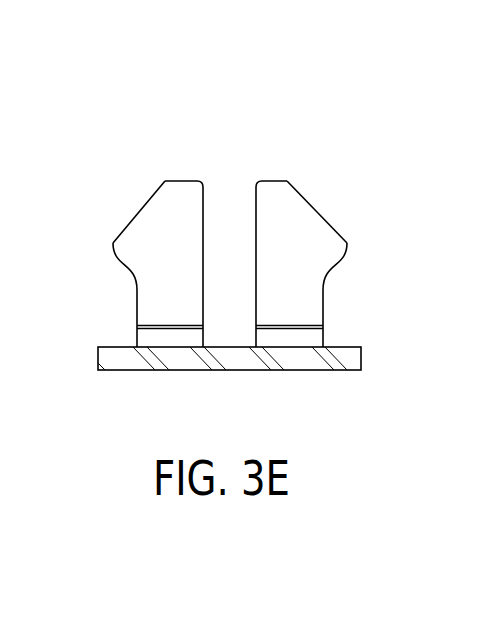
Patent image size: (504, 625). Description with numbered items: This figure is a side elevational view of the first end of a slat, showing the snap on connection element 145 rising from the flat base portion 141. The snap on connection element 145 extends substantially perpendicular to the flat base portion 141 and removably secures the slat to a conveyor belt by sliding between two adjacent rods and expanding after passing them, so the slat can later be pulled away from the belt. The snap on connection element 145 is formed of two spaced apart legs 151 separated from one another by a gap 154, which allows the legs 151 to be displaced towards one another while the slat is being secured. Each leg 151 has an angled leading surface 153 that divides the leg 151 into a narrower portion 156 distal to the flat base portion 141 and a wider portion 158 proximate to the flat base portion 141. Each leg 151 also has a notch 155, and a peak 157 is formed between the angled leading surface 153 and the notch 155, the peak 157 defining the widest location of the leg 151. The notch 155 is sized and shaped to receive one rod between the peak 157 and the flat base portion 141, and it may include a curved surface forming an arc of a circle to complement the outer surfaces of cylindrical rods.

The snap on connection element 145 is at (100, 204).
The flat base portion 141 is at (225, 357).
The leg 151 is at (165, 184).
The angled leading surface 153 is at (138, 218).
The gap 154 is at (231, 202).
The notch 155 is at (137, 301).
The narrower portion 156 is at (188, 193).
The peak 157 is at (340, 253).
The wider portion 158 is at (118, 250).